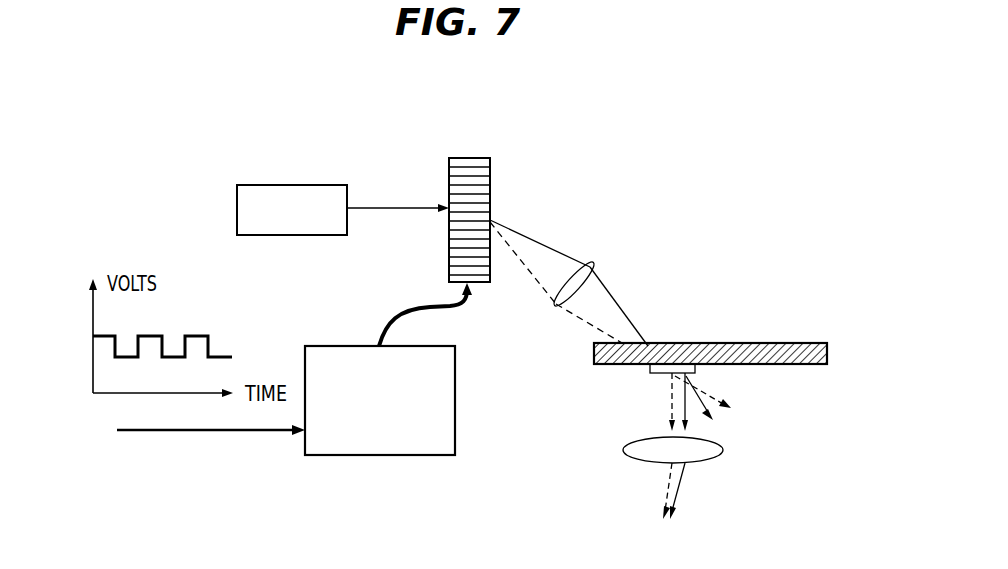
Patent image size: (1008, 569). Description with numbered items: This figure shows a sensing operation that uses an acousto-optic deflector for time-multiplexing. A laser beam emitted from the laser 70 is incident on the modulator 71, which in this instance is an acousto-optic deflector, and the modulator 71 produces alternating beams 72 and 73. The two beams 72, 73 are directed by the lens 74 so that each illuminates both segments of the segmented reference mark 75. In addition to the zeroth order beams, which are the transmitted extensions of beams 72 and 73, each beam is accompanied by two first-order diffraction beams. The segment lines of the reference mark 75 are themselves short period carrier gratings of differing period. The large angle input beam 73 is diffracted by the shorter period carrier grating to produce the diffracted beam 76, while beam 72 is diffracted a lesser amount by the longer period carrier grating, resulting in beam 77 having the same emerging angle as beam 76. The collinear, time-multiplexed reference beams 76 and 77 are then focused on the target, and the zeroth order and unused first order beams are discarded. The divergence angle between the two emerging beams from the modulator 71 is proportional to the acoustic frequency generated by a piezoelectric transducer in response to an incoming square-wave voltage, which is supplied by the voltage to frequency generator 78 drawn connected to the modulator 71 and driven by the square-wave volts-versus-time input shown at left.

The laser 70 is at (276, 185).
The modulator 71 is at (470, 158).
The beam 72 is at (534, 244).
The beam 73 is at (528, 264).
The lens 74 is at (596, 264).
The segmented reference mark 75 is at (690, 357).
The diffracted beam 76 is at (672, 396).
The beam 77 is at (690, 415).
The voltage to frequency generator 78 is at (350, 456).